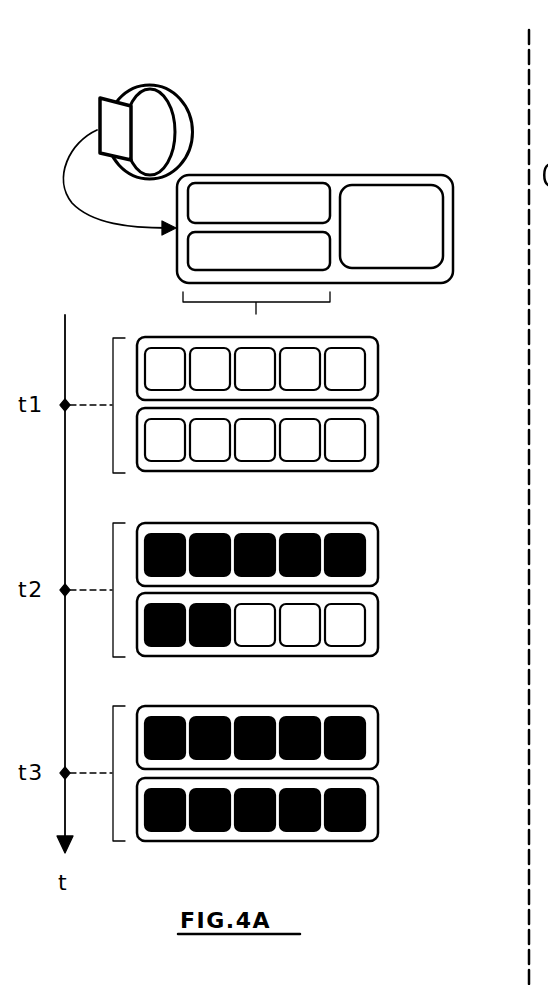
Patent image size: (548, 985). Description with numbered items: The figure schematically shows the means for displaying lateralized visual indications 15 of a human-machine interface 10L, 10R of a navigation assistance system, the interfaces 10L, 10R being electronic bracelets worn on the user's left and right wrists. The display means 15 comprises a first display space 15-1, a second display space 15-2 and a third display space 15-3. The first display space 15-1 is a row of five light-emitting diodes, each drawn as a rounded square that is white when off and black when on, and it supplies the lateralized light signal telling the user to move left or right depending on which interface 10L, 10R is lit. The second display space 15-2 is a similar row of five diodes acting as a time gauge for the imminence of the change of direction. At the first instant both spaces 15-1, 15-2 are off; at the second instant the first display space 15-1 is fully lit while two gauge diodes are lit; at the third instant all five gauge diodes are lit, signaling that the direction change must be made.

The human-machine interface 10L is at (167, 88).
The human-machine interface 10R is at (270, 50).
The means for displaying lateralized visual indications 15 is at (373, 175).
The first display space 15-1 is at (378, 737).
The second display space 15-2 is at (378, 809).
The third display space 15-3 is at (391, 226).